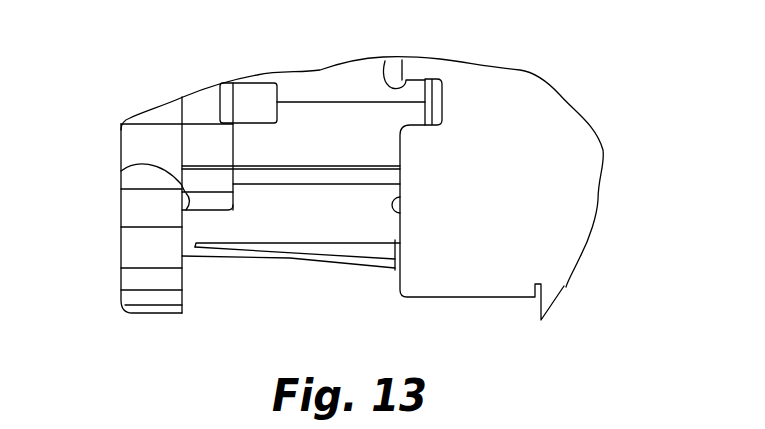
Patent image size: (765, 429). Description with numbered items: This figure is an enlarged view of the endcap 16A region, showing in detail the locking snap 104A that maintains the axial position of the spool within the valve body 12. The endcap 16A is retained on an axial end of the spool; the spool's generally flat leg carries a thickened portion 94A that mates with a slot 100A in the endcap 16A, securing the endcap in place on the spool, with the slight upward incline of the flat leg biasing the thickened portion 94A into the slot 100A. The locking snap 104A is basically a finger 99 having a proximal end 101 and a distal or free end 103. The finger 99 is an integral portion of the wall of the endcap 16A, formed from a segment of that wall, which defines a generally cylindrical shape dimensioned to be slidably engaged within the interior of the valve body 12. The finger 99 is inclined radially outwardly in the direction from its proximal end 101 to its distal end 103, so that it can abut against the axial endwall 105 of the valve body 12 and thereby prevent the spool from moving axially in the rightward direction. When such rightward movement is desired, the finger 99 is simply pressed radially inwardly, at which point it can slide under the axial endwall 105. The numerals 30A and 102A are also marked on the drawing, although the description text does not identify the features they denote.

The valve body 12 is at (544, 227).
The endcap 16A is at (137, 304).
The latch hook 30A is at (383, 59).
The thickened portion 94A is at (213, 141).
The finger 99 is at (290, 256).
The slot 100A is at (120, 171).
The proximal end 101 is at (230, 243).
The button 102A is at (247, 93).
The distal end 103 is at (392, 271).
The locking snap 104A is at (328, 259).
The axial endwall 105 is at (405, 202).